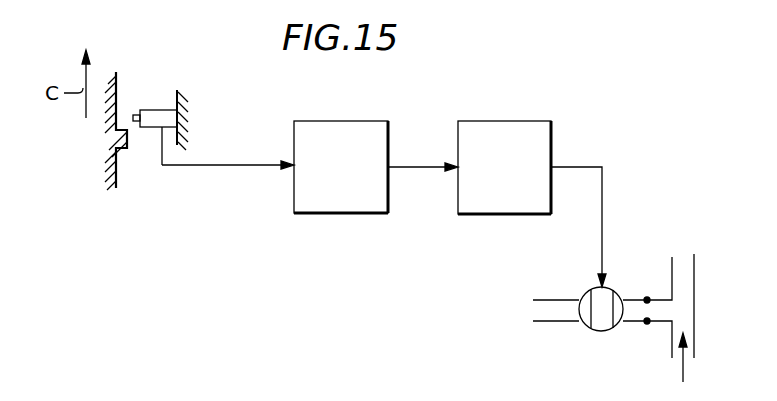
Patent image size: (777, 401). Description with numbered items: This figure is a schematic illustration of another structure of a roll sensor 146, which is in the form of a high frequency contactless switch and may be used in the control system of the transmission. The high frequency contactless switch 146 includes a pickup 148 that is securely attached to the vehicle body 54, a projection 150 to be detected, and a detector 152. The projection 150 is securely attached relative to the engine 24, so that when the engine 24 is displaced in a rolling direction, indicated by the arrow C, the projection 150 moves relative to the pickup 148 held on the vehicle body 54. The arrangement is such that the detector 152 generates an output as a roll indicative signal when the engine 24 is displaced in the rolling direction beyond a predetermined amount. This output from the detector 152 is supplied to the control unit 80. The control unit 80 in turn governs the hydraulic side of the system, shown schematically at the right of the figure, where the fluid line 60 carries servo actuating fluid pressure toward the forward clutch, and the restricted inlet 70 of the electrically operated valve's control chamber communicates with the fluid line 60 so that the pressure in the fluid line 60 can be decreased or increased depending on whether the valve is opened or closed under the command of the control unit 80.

The engine 24 is at (108, 142).
The vehicle body 54 is at (187, 111).
The fluid line 60 is at (617, 297).
The restricted inlet 70 is at (649, 303).
The control unit 80 is at (480, 216).
The roll sensor 146 is at (143, 93).
The pickup 148 is at (165, 110).
The projection 150 is at (120, 147).
The detector 152 is at (377, 215).